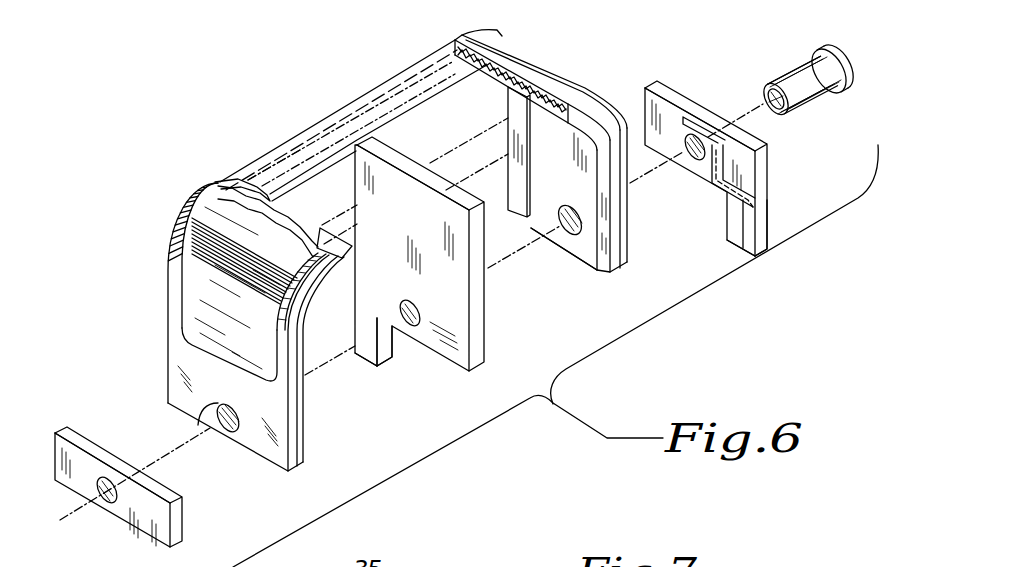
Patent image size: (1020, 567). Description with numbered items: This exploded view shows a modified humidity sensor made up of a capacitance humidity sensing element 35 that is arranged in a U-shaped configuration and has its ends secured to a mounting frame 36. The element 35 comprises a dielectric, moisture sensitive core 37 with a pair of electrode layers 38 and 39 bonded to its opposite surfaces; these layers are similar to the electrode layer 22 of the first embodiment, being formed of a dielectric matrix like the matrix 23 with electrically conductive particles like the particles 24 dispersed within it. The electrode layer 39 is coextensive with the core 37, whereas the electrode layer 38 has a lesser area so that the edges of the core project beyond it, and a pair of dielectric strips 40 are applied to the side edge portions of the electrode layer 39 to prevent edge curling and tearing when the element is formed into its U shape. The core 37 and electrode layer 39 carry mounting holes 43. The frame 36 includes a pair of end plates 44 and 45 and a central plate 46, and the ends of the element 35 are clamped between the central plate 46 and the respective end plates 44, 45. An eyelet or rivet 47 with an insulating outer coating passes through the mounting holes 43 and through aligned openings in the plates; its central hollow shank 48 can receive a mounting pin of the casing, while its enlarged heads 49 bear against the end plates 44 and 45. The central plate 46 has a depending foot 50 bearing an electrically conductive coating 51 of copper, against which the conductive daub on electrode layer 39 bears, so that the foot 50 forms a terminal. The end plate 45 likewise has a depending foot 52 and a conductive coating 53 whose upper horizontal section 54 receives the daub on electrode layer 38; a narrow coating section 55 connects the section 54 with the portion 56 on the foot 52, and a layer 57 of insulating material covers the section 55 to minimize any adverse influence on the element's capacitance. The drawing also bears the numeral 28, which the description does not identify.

The electrode layer 22 is at (324, 7).
The matrix 23 is at (364, 7).
The electrically conductive particles 24 is at (405, 7).
The cable 28 is at (271, 90).
The capacitance humidity sensing element 35 is at (168, 272).
The mounting frame 36 is at (107, 414).
The dielectric moisture sensitive core 37 is at (178, 353).
The electrode layer 38 is at (262, 330).
The electrode layer 39 is at (543, 210).
The strips 40 is at (515, 101).
The mounting holes 43 is at (213, 408).
The end plate 44 is at (140, 528).
The end plate 45 is at (763, 167).
The central plate 46 is at (403, 162).
The eyelet or rivet 47 is at (794, 63).
The central hollow shank 48 is at (778, 80).
The enlarged heads 49 is at (840, 53).
The depending foot or projection 50 is at (387, 352).
The electrically conductive coating 51 is at (367, 350).
The depending foot or projection 52 is at (767, 230).
The electrically conductive coating 53 is at (757, 219).
The upper horizontal section 54 is at (710, 116).
The narrow coating section 55 is at (712, 187).
The portion of coating on foot 56 is at (743, 247).
The layer of insulating material 57 is at (727, 157).